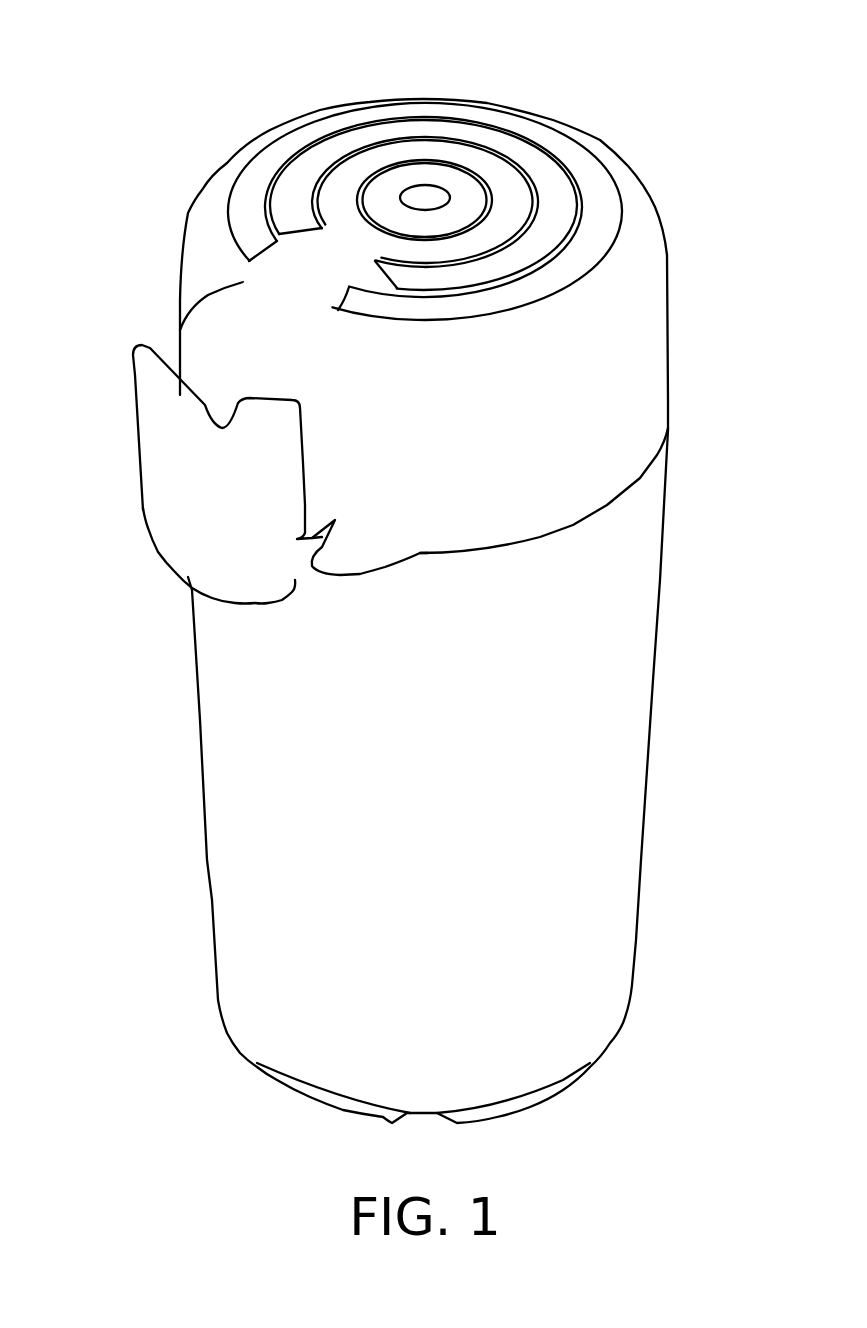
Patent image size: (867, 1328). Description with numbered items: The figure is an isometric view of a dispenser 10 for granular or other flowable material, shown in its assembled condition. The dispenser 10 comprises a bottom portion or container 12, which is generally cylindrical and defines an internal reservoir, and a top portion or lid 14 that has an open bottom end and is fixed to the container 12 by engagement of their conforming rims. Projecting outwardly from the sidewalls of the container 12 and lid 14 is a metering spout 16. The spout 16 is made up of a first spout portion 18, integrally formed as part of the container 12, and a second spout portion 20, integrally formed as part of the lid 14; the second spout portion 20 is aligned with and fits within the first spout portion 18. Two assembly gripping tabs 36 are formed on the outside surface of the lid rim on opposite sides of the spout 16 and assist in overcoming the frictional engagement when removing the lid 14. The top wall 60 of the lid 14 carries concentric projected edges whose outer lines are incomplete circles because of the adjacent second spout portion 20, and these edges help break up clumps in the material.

The dispenser 10 is at (142, 159).
The container 12 is at (612, 609).
The lid 14 is at (623, 388).
The metering spout 16 is at (168, 495).
The first spout portion 18 is at (168, 432).
The second spout portion 20 is at (208, 342).
The gripping tabs 36 is at (347, 548).
The top wall 60 is at (425, 197).